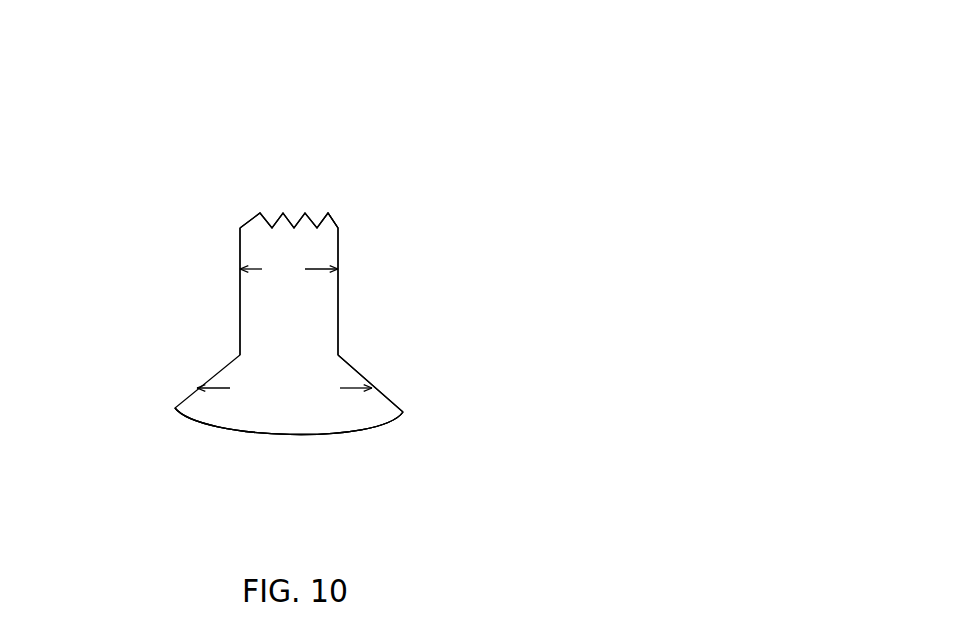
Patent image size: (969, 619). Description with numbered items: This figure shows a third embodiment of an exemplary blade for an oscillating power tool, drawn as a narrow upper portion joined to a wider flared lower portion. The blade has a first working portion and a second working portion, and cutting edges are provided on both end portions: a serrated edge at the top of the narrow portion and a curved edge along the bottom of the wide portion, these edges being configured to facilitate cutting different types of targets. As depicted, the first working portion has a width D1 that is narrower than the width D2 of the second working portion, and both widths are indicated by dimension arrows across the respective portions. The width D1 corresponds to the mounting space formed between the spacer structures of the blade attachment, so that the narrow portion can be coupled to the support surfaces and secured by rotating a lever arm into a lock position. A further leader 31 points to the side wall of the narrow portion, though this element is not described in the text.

The shank side wall 31 is at (238, 322).
The width of the first working portion D1 is at (289, 272).
The width of the second working portion D2 is at (284, 392).